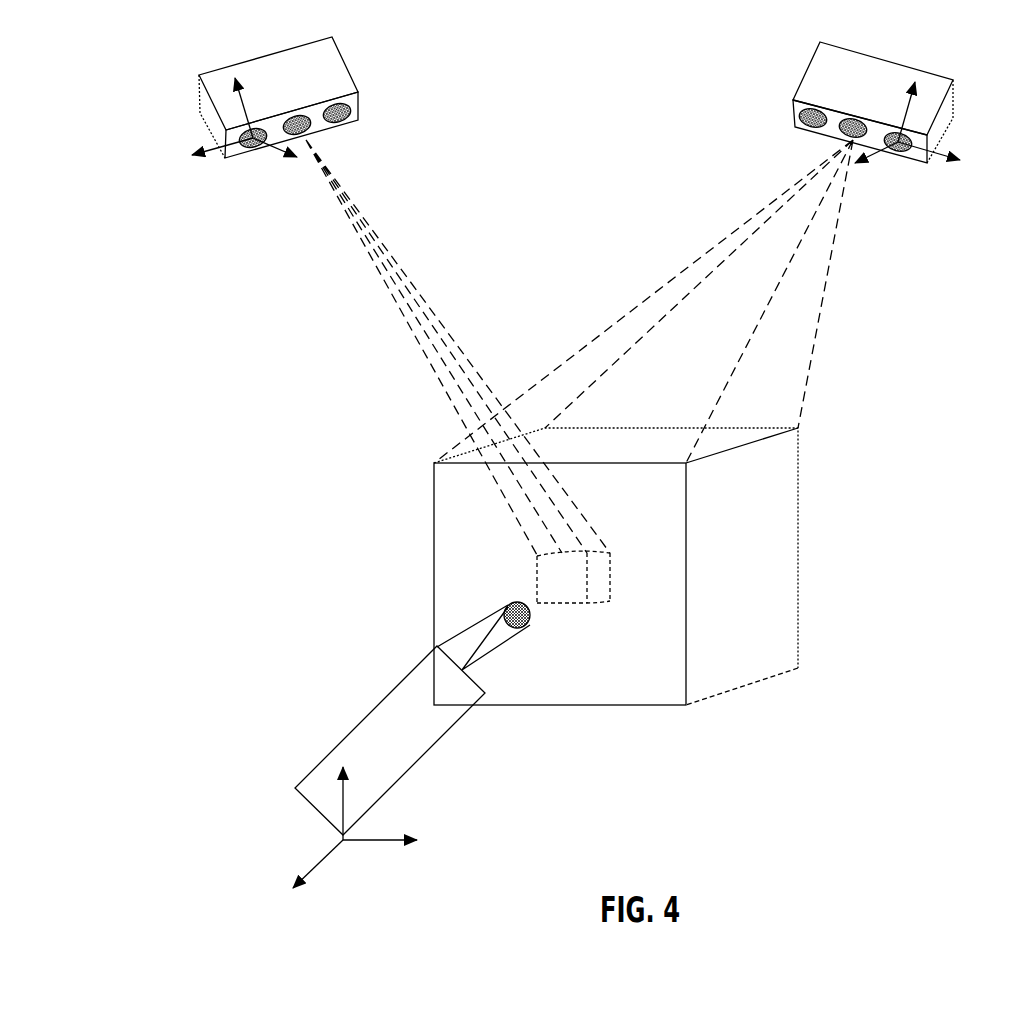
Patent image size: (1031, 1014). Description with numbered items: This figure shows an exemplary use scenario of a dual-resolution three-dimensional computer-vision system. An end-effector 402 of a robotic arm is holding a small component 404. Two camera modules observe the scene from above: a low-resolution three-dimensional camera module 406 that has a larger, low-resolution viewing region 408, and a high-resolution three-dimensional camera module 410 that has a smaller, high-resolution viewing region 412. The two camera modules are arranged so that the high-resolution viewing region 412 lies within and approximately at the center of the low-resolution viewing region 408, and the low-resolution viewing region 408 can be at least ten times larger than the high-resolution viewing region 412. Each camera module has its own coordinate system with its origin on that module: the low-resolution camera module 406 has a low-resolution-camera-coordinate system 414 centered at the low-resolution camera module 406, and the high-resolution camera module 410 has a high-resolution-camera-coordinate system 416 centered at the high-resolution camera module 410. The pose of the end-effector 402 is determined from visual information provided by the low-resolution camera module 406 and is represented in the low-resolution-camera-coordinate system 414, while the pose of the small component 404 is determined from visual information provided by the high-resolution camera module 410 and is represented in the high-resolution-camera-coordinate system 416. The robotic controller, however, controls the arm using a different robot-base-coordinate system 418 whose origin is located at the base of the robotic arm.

The end-effector 402 is at (482, 675).
The small component 404 is at (530, 617).
The low-resolution 3D camera module 406 is at (848, 63).
The low-resolution viewing region 408 is at (782, 598).
The high-resolution 3D camera module 410 is at (203, 102).
The high-resolution viewing region 412 is at (607, 577).
The low-resolution-camera-coordinate system 414 is at (948, 155).
The high-resolution-camera-coordinate system 416 is at (208, 157).
The robot-base-coordinate system 418 is at (323, 863).